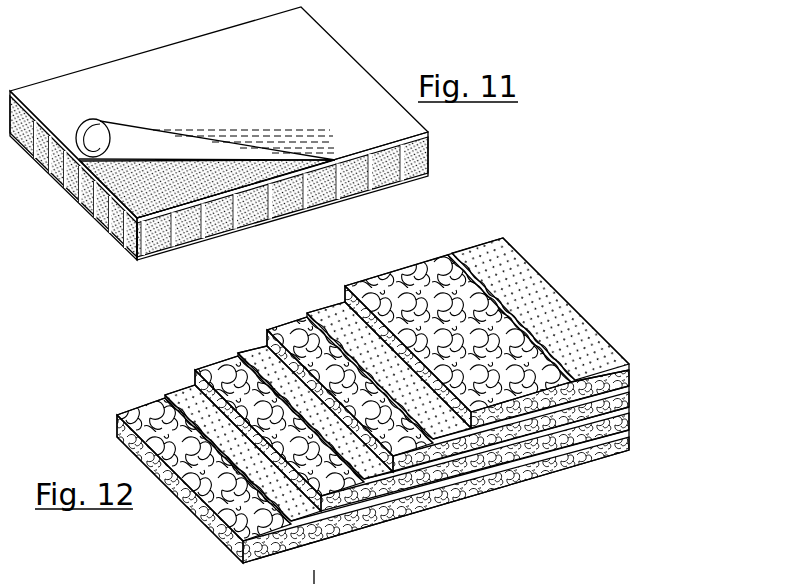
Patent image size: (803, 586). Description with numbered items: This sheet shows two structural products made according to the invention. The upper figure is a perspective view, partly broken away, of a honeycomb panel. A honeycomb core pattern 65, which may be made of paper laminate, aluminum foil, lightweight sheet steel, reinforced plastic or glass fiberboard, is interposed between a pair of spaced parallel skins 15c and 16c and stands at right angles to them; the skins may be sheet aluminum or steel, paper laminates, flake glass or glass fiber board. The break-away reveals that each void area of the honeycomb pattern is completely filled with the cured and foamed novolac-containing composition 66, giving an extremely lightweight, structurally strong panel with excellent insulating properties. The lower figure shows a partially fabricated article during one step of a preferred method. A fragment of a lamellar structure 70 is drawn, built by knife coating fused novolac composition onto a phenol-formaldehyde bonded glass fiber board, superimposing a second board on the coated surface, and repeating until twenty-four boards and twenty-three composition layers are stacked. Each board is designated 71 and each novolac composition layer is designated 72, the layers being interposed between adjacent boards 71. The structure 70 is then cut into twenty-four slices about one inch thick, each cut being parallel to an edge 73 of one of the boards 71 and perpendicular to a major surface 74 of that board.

In FIG. 11, the skin 15c is at (124, 73).
In FIG. 11, the skin 16c is at (110, 229).
In FIG. 11, the honeycomb core pattern 65 is at (237, 185).
In FIG. 11, the cured and foamed novolac-containing composition 66 is at (182, 231).
In FIG. 12, the lamellar structure 70 is at (552, 273).
In FIG. 12, the board 71 is at (632, 397).
In FIG. 12, the layer of novolac composition 72 is at (259, 352).
In FIG. 12, the edge 73 is at (556, 388).
In FIG. 12, the major surface 74 is at (427, 293).